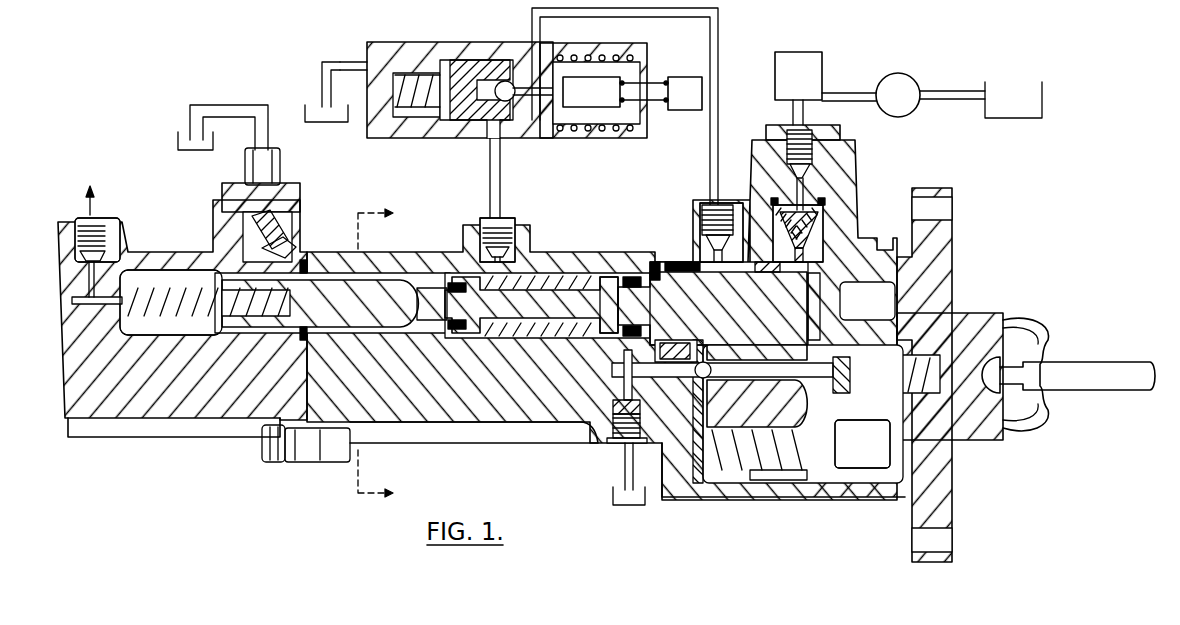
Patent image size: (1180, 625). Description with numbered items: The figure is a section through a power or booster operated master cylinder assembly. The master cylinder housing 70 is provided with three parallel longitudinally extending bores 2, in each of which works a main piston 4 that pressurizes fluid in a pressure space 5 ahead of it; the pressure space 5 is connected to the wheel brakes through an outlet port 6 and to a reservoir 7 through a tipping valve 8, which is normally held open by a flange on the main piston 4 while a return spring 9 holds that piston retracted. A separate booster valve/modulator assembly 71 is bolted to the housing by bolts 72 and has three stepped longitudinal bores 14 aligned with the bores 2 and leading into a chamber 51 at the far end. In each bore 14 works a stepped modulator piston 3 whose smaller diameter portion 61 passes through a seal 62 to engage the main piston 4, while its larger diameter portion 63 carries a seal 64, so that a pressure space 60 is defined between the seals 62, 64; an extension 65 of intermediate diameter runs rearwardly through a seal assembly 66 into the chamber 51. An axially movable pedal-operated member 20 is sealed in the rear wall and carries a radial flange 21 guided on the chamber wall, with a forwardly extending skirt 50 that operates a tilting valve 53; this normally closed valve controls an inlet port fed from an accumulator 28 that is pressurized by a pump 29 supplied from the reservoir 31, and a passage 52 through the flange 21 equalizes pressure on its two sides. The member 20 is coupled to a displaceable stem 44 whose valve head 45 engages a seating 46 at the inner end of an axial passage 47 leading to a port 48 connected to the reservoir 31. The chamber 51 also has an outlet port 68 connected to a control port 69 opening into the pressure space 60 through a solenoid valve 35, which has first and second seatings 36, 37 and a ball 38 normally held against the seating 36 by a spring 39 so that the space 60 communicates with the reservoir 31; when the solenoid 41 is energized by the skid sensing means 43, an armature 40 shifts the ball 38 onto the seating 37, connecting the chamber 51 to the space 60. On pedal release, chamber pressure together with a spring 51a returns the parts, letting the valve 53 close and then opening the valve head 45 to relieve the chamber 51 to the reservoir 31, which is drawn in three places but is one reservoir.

The longitudinally extending bore 2 is at (200, 272).
The stepped modulator piston 3 is at (551, 294).
The main piston 4 is at (363, 300).
The pressure space 5 is at (167, 280).
The outlet port 6 is at (100, 263).
The reservoir 7 is at (178, 140).
The tipping valve 8 is at (290, 233).
The return spring 9 is at (155, 286).
The stepped longitudinal bore 14 is at (586, 272).
The pedal-operated member 20 is at (976, 356).
The radial flange 21 is at (877, 470).
The accumulator 28 is at (785, 92).
The pump 29 is at (898, 74).
The reservoir 31 is at (311, 107).
The solenoid valve 35 is at (405, 30).
The first seating 36 is at (523, 62).
The second seating 37 is at (468, 75).
The ball 38 is at (503, 84).
The spring 39 is at (407, 78).
The armature 40 is at (606, 86).
The solenoid 41 is at (572, 56).
The skid sensing means 43 is at (680, 86).
The displaceable stem 44 is at (925, 315).
The valve head 45 is at (672, 380).
The seating 46 is at (677, 342).
The axial passage 47 is at (633, 443).
The port 48 is at (612, 446).
The skirt 50 is at (767, 266).
The chamber 51 is at (748, 474).
The spring 51a is at (736, 470).
The passage 52 is at (824, 306).
The tilting valve 53 is at (822, 203).
The pressure space 60 is at (595, 277).
The smaller diameter portion 61 is at (428, 306).
The seal 62 is at (455, 283).
The larger diameter portion 63 is at (660, 262).
The seal 64 is at (630, 277).
The extension 65 is at (717, 326).
The seal assembly 66 is at (680, 262).
The outlet port 68 is at (722, 203).
The control port 69 is at (512, 221).
The master cylinder housing 70 is at (163, 440).
The booster valve/modulator assembly 71 is at (438, 443).
The bolts 72 is at (263, 452).